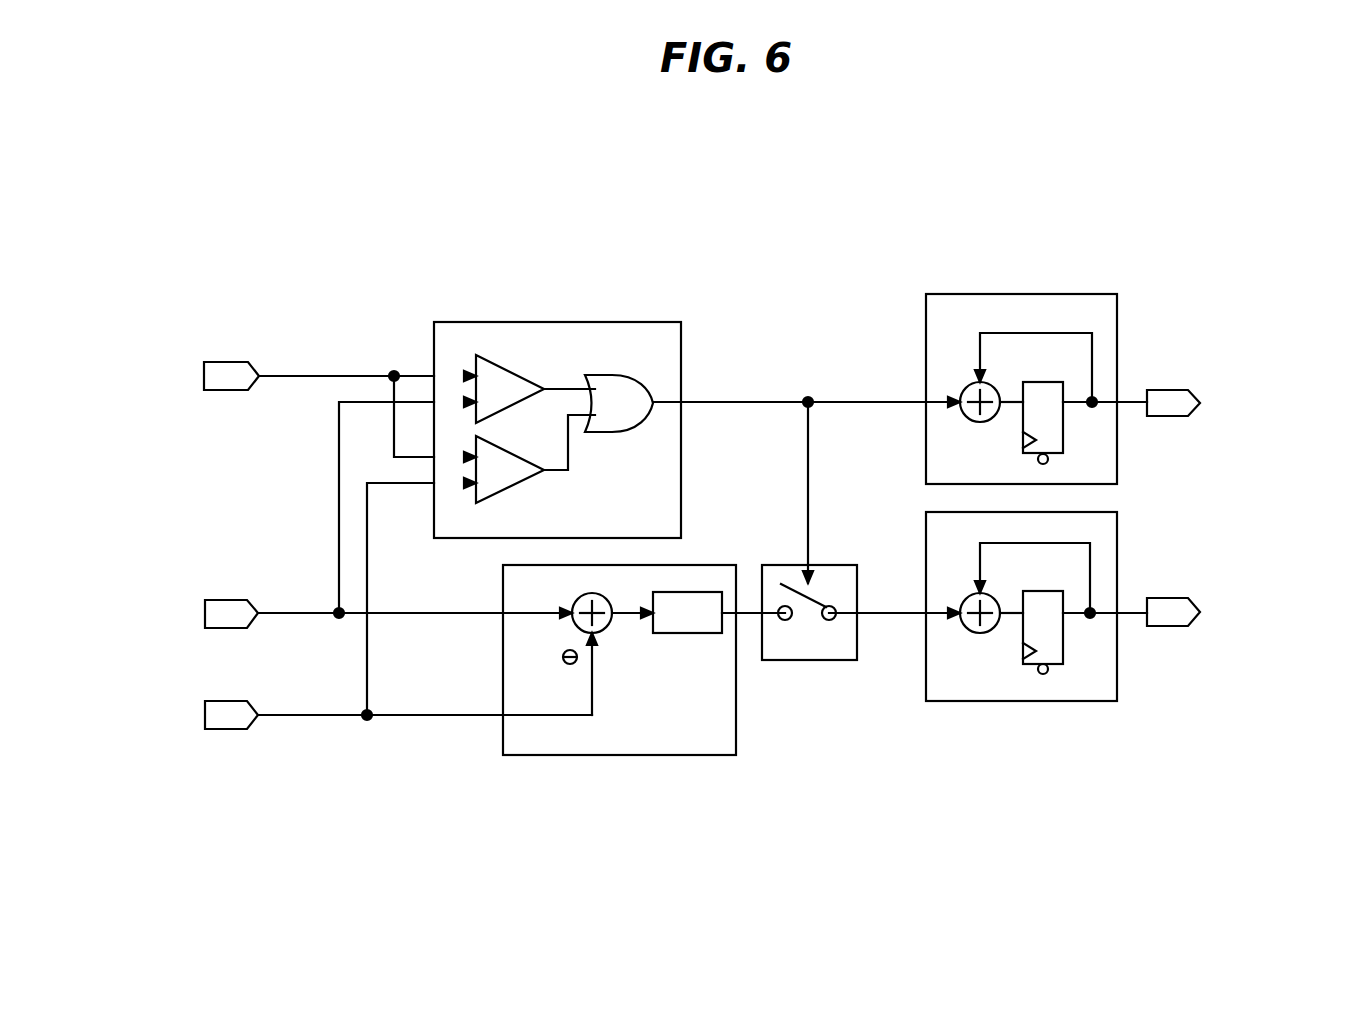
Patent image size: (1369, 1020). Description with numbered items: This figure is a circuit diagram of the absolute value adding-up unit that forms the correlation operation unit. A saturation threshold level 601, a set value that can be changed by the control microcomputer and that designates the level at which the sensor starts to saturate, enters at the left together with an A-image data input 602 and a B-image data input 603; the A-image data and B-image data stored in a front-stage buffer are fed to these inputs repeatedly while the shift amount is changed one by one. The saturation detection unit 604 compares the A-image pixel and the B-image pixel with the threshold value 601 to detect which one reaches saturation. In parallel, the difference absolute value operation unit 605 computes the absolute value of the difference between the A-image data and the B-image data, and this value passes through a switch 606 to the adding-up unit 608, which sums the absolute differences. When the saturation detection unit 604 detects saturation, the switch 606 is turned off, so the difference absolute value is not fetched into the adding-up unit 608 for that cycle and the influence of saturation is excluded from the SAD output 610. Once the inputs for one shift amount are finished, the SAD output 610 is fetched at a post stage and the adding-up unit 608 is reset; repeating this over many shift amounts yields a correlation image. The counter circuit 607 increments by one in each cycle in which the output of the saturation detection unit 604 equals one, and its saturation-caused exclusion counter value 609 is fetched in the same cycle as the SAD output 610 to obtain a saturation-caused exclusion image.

The saturation threshold level 601 is at (228, 391).
The A-image data input 602 is at (228, 629).
The B-image data input 603 is at (228, 731).
The saturation detection unit 604 is at (681, 352).
The difference absolute value operation unit 605 is at (620, 756).
The switch 606 is at (811, 661).
The counter circuit 607 is at (1018, 293).
The adding-up unit 608 is at (1020, 702).
The saturation-caused exclusion counter value 609 is at (1172, 417).
The SAD output 610 is at (1172, 627).